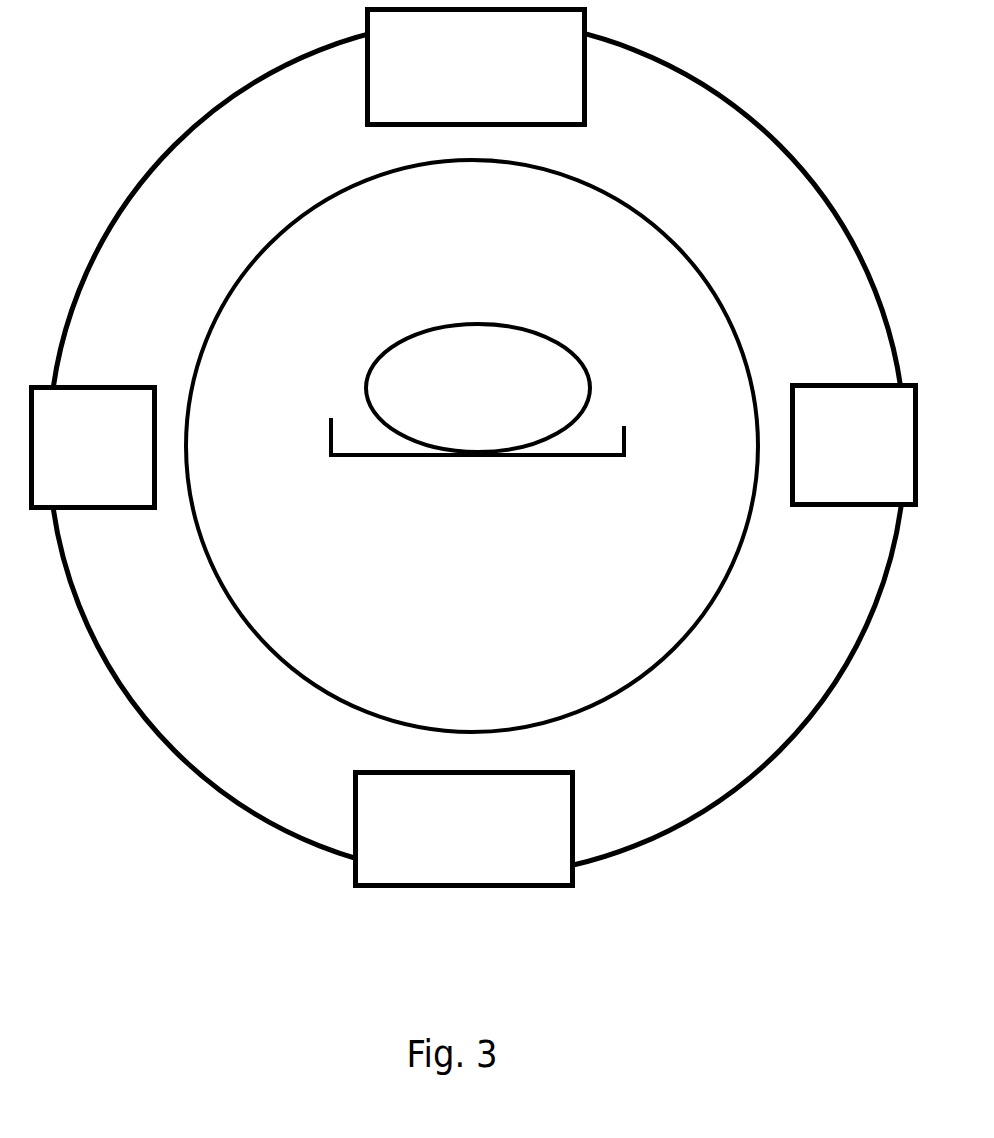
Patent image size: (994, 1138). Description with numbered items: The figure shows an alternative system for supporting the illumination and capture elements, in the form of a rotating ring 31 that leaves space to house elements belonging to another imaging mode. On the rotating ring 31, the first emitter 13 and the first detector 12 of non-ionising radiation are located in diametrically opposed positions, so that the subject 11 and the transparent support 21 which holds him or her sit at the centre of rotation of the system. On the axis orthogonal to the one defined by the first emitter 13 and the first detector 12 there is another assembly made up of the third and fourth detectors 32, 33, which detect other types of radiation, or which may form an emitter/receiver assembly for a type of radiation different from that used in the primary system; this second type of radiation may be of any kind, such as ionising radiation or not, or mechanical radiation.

The subject 11 is at (478, 388).
The first detector 12 is at (464, 829).
The first emitter 13 is at (476, 67).
The transparent support 21 is at (442, 465).
The rotating ring 31 is at (477, 448).
The third detector 32 is at (93, 448).
The fourth detector 33 is at (854, 445).